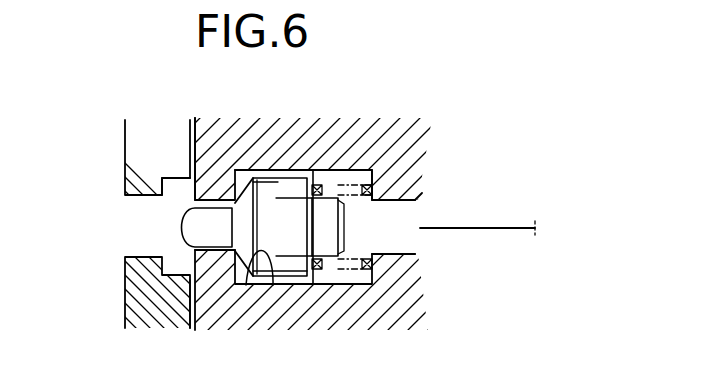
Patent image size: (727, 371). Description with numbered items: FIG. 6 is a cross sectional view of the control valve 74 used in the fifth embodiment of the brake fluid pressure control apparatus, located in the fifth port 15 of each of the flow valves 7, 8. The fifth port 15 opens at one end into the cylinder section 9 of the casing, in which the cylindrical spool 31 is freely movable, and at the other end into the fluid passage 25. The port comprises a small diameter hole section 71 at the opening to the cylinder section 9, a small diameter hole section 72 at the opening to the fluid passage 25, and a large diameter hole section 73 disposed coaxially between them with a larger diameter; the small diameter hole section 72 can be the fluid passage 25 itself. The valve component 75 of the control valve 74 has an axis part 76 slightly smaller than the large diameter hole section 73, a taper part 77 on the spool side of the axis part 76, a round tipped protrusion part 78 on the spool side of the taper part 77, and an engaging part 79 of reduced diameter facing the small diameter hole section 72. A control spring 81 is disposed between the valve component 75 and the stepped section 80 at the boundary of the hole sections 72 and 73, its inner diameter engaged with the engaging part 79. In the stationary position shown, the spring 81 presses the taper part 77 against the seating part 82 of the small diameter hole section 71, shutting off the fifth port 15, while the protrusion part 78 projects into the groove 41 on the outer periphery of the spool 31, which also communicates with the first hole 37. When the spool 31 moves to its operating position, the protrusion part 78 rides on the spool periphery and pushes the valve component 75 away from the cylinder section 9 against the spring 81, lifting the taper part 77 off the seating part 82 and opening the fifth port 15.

The flow valve 7 is at (327, 128).
The flow valve 8 is at (340, 86).
The cylinder section 9 is at (192, 316).
The fifth port 15 is at (190, 246).
The fluid passage 25 is at (503, 228).
The spool 31 is at (140, 155).
The first hole 37 is at (160, 196).
The groove 41 is at (186, 206).
The small diameter hole section 71 is at (213, 247).
The small diameter hole section 72 is at (405, 248).
The large diameter hole section 73 is at (318, 284).
The control valve 74 is at (390, 165).
The valve component 75 is at (325, 182).
The axis part 76 is at (303, 170).
The taper part 77 is at (249, 180).
The protrusion part 78 is at (210, 198).
The engaging part 79 is at (370, 182).
The stepped section 80 is at (368, 272).
The control spring 81 is at (347, 260).
The seating part 82 is at (273, 285).